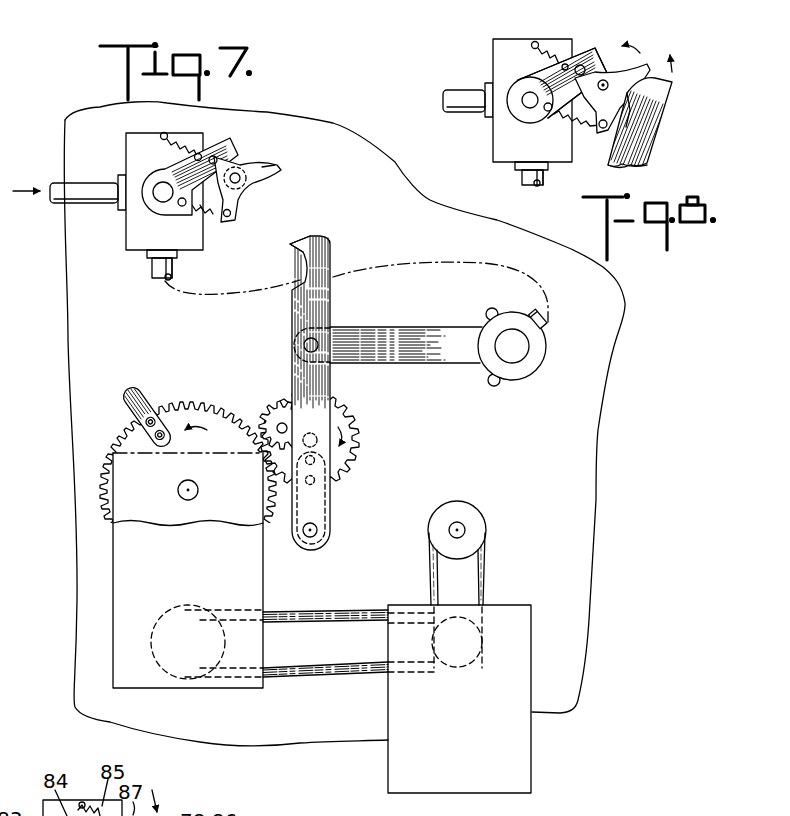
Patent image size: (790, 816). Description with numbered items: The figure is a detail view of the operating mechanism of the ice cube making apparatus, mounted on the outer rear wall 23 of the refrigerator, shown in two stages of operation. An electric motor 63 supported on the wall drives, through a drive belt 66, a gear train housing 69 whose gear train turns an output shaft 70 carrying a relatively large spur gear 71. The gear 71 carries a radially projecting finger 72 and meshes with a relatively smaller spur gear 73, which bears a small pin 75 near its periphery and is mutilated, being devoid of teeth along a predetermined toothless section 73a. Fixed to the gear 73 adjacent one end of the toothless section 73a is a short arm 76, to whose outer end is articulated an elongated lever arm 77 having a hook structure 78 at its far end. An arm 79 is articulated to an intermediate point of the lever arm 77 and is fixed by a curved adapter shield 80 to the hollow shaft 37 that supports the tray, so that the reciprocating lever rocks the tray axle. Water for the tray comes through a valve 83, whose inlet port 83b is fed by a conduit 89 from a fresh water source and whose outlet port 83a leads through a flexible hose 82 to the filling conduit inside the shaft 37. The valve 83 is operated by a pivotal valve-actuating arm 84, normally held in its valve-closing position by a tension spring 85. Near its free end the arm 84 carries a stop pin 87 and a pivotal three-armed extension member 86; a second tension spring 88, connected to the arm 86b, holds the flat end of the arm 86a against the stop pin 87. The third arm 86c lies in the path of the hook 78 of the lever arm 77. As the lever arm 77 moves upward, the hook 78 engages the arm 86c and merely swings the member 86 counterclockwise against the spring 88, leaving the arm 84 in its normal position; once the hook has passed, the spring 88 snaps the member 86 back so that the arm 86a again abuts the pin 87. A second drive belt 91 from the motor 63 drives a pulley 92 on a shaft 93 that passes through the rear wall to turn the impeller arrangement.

In FIG. 7, the outer rear wall 23 is at (575, 455).
In FIG. 7, the hollow shaft 37 is at (547, 350).
In FIG. 7, the electric motor 63 is at (520, 677).
In FIG. 7, the drive belt 66 is at (330, 612).
In FIG. 7, the gear train housing 69 is at (123, 572).
In FIG. 7, the output shaft 70 is at (178, 493).
In FIG. 7, the spur gear 71 is at (203, 413).
In FIG. 7, the finger 72 is at (142, 388).
In FIG. 7, the spur gear 73 is at (357, 442).
In FIG. 7, the toothless section 73a is at (283, 505).
In FIG. 7, the pin 75 is at (276, 412).
In FIG. 7, the arm 76 is at (322, 508).
In FIG. 7, the lever arm 77 is at (327, 303).
In FIG. 8, the lever arm 77 is at (648, 163).
In FIG. 7, the hook structure 78 is at (305, 230).
In FIG. 8, the hook structure 78 is at (670, 95).
In FIG. 7, the arm 79 is at (435, 357).
In FIG. 7, the curved adapter shield 80 is at (480, 323).
In FIG. 7, the flexible hose 82 is at (155, 280).
In FIG. 8, the flexible hose 82 is at (545, 180).
In FIG. 7, the valve 83 is at (127, 240).
In FIG. 8, the valve 83 is at (507, 152).
In FIG. 7, the outlet port 83a is at (147, 258).
In FIG. 7, the inlet port 83b is at (120, 210).
In FIG. 8, the inlet port 83b is at (489, 100).
In FIG. 7, the valve-actuating arm 84 is at (227, 142).
In FIG. 8, the valve-actuating arm 84 is at (537, 80).
In FIG. 7, the tension spring 85 is at (185, 142).
In FIG. 8, the tension spring 85 is at (566, 84).
In FIG. 7, the three-armed extension member 86 is at (243, 187).
In FIG. 8, the three-armed extension member 86 is at (612, 98).
In FIG. 8, the arm of extension member 86a is at (609, 58).
In FIG. 7, the arm of extension member 86b is at (233, 208).
In FIG. 8, the arm of extension member 86b is at (603, 124).
In FIG. 7, the third arm 86c is at (279, 168).
In FIG. 8, the third arm 86c is at (646, 66).
In FIG. 7, the stop pin 87 is at (220, 157).
In FIG. 8, the stop pin 87 is at (582, 65).
In FIG. 7, the tension spring 88 is at (208, 213).
In FIG. 7, the conduit 89 is at (77, 188).
In FIG. 8, the conduit 89 is at (450, 93).
In FIG. 7, the drive belt 91 is at (485, 577).
In FIG. 7, the pulley 92 is at (477, 522).
In FIG. 7, the shaft 93 is at (463, 525).